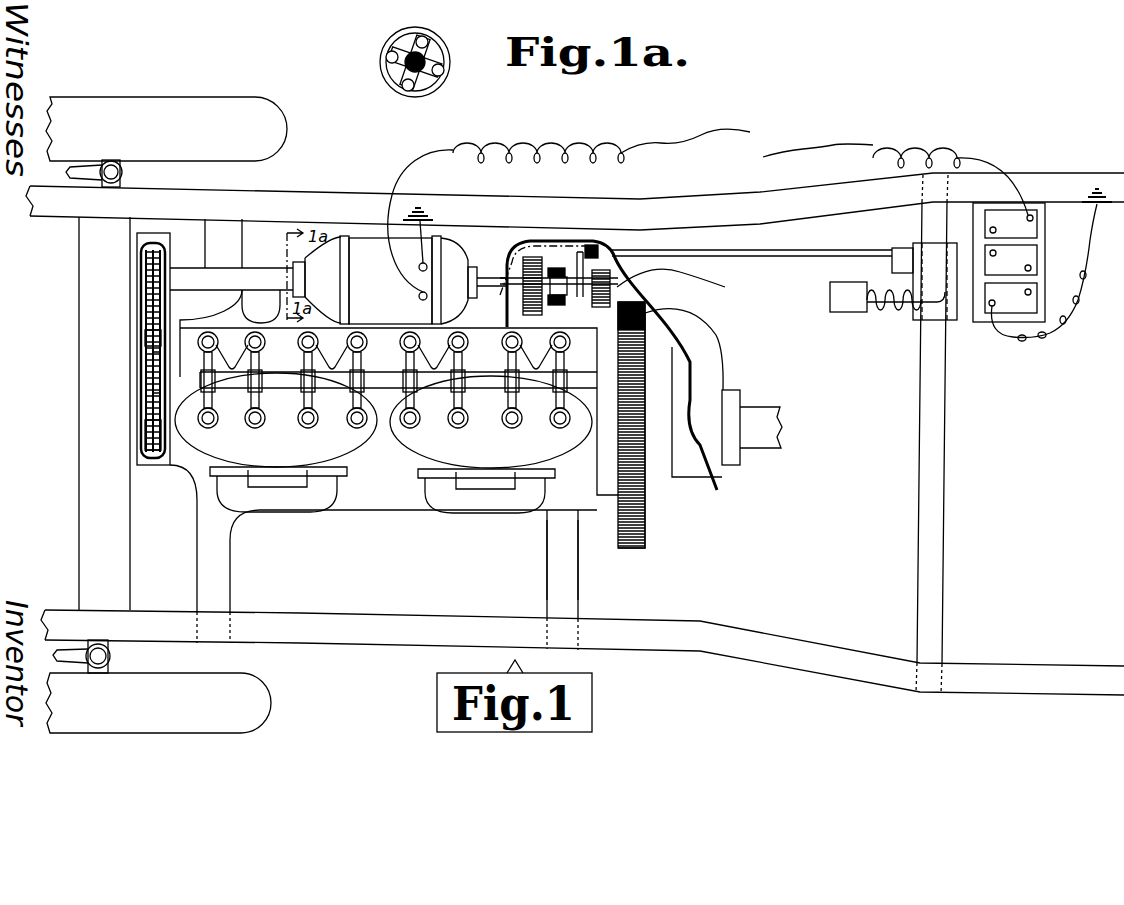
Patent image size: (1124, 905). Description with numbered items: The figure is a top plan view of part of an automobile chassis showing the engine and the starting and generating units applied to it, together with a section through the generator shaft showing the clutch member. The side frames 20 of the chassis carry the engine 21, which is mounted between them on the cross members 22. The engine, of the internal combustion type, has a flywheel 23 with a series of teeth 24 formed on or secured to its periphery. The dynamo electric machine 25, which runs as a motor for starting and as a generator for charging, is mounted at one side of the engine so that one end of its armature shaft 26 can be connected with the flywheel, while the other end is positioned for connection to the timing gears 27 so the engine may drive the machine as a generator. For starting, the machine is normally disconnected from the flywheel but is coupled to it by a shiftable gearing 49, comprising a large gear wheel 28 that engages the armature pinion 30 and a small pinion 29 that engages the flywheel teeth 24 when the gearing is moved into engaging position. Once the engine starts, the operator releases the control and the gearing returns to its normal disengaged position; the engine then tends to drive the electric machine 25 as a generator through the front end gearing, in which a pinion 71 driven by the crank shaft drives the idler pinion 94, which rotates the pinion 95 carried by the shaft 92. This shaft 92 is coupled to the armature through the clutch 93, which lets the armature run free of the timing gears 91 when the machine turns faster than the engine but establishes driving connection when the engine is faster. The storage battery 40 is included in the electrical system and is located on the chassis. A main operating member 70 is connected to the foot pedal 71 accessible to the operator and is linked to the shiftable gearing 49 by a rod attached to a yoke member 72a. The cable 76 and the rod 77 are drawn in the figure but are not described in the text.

In FIG. 1, the side frames 20 is at (298, 203).
In FIG. 1, the engine 21 is at (332, 443).
In FIG. 1, the cross members 22 is at (565, 535).
In FIG. 1, the flywheel 23 is at (653, 483).
In FIG. 1, the teeth 24 is at (627, 520).
In FIG. 1, the dynamo electric machine 25 is at (527, 226).
In FIG. 1, the armature shaft 26 is at (490, 300).
In FIG. 1, the timing gears 27 is at (153, 393).
In FIG. 1, the large gear wheel 28 is at (532, 312).
In FIG. 1, the small pinion 29 is at (600, 302).
In FIG. 1, the armature pinion 30 is at (558, 270).
In FIG. 1, the storage battery 40 is at (1015, 258).
In FIG. 1, the shiftable gearing 49 is at (564, 265).
In FIG. 1, the main operating member 70 is at (897, 314).
In FIG. 1, the foot pedal 71 is at (840, 312).
In FIG. 1, the yoke member 72a is at (588, 246).
In FIG. 1, the cable 76 is at (689, 286).
In FIG. 1, the control rod 77 is at (778, 258).
In FIG. 1, the timing gears 91 is at (150, 428).
In FIG. 1, the shaft 92 is at (268, 283).
In FIG. 1A, the clutch 93 is at (445, 85).
In FIG. 1, the clutch 93 is at (300, 262).
In FIG. 1, the idler pinion 94 is at (152, 338).
In FIG. 1, the pinion 95 is at (148, 280).